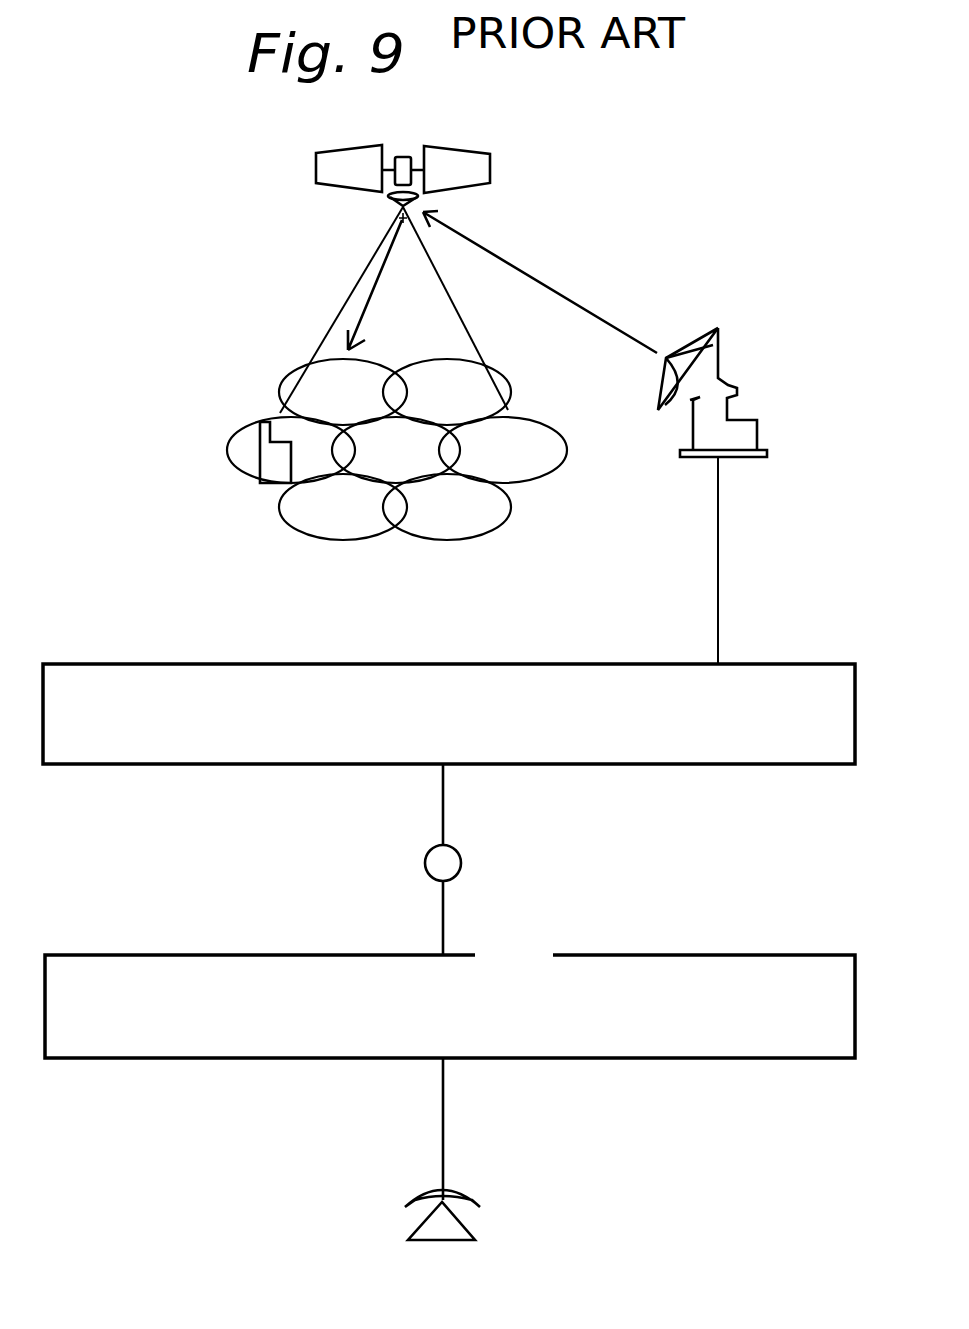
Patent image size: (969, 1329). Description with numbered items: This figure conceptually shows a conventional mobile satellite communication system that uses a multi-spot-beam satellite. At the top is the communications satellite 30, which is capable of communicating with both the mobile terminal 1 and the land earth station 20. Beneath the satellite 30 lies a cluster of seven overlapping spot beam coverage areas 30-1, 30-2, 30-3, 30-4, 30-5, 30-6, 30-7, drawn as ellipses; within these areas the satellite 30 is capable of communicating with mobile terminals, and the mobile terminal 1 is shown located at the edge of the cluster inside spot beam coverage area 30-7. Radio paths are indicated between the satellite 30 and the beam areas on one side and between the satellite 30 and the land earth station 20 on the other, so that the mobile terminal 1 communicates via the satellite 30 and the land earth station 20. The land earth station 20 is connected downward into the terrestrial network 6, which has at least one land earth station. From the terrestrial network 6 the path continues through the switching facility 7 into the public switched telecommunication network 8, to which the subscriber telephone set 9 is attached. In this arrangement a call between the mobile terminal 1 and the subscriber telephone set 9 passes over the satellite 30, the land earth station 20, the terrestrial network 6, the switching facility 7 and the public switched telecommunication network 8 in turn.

The mobile terminal 1 is at (260, 440).
The terrestrial network 6 is at (70, 664).
The switching facility 7 is at (461, 850).
The public switched telecommunication network 8 is at (75, 955).
The subscriber telephone set 9 is at (463, 1193).
The land earth station 20 is at (712, 342).
The communications satellite 30 is at (490, 168).
The spot beam coverage area 30-1 is at (396, 450).
The spot beam coverage area 30-2 is at (333, 363).
The spot beam coverage area 30-3 is at (452, 363).
The spot beam coverage area 30-4 is at (541, 422).
The spot beam coverage area 30-5 is at (513, 495).
The spot beam coverage area 30-6 is at (343, 507).
The spot beam coverage area 30-7 is at (230, 470).